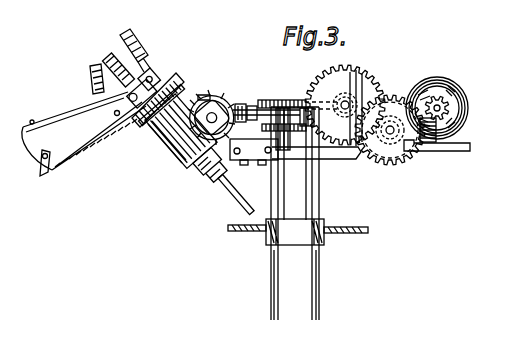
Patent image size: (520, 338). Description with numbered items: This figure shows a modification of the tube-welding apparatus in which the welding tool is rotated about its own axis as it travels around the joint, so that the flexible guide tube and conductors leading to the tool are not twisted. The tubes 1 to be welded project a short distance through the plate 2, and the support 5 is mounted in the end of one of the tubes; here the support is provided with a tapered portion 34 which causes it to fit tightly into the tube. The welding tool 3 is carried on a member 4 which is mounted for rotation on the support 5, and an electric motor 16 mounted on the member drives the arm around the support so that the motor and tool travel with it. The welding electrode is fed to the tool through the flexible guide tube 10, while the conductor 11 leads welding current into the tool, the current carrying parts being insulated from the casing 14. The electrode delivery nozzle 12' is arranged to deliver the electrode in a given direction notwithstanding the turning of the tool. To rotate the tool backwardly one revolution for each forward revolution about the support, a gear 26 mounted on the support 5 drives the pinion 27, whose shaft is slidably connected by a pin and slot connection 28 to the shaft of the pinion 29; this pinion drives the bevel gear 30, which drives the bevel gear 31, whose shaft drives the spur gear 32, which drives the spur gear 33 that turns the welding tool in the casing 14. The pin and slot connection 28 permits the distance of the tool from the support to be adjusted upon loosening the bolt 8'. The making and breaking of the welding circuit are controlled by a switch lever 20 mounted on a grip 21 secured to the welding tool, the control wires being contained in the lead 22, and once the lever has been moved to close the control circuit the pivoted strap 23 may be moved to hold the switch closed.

The tubes 1 is at (268, 277).
The plate 2 is at (358, 234).
The welding tool 3 is at (171, 160).
The member 4 is at (350, 160).
The support 5 is at (300, 197).
The bolt 8' is at (227, 168).
The flexible guide tube 10 is at (118, 62).
The conductor 11 is at (136, 52).
The electrode delivery nozzle 12' is at (224, 203).
The casing 14 is at (166, 135).
The electric motor 16 is at (438, 80).
The switch lever 20 is at (70, 162).
The grip 21 is at (62, 118).
The lead 22 is at (89, 81).
The pivoted strap 23 is at (42, 177).
The gear 26 is at (318, 159).
The pinion 27 is at (271, 100).
The pin and slot connection 28 is at (251, 105).
The pinion 29 is at (238, 102).
The bevel gear 30 is at (212, 96).
The bevel gear 31 is at (205, 93).
The spur gear 32 is at (178, 73).
The spur gear 33 is at (141, 122).
The tapered portion 34 is at (268, 240).